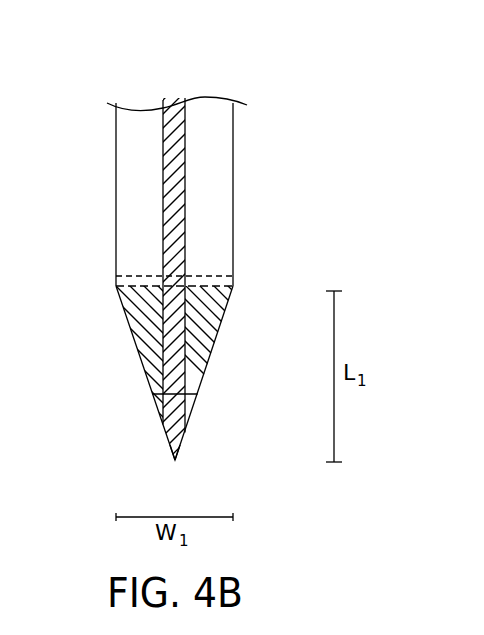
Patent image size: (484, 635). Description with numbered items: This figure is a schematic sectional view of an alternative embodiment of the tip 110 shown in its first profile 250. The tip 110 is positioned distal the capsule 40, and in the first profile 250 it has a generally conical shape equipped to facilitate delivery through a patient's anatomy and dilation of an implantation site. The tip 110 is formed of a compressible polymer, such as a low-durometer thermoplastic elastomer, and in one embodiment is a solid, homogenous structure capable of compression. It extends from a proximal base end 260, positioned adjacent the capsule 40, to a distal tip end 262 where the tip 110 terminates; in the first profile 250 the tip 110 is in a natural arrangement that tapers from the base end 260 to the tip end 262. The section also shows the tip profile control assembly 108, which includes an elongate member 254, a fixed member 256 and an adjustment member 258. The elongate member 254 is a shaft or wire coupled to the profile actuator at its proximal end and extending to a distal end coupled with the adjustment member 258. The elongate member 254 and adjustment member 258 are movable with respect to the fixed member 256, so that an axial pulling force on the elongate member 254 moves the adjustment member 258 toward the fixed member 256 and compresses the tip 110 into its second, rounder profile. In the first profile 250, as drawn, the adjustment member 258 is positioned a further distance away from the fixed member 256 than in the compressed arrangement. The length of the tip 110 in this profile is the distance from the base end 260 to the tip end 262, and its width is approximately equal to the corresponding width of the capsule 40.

The tip profile control assembly 108 is at (216, 262).
The capsule 40 is at (116, 178).
The elongate member 254 is at (186, 180).
The fixed member 256 is at (205, 276).
The base end 260 is at (130, 312).
The first profile 250 is at (205, 362).
The adjustment member 258 is at (188, 408).
The tip end 262 is at (175, 460).
The tip 110 is at (216, 389).